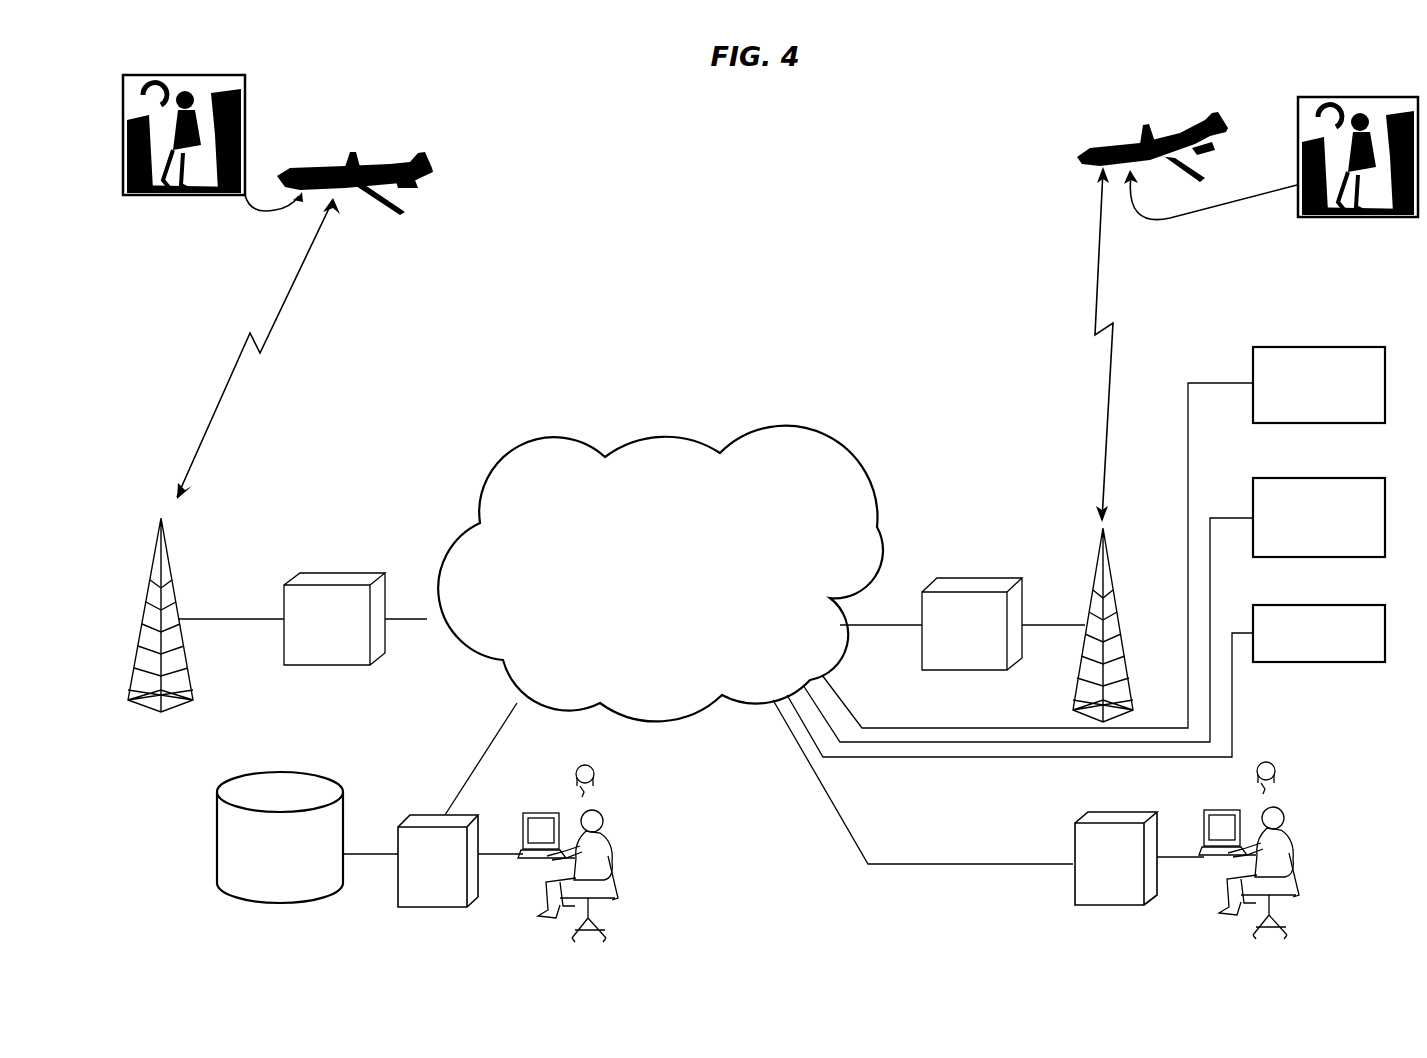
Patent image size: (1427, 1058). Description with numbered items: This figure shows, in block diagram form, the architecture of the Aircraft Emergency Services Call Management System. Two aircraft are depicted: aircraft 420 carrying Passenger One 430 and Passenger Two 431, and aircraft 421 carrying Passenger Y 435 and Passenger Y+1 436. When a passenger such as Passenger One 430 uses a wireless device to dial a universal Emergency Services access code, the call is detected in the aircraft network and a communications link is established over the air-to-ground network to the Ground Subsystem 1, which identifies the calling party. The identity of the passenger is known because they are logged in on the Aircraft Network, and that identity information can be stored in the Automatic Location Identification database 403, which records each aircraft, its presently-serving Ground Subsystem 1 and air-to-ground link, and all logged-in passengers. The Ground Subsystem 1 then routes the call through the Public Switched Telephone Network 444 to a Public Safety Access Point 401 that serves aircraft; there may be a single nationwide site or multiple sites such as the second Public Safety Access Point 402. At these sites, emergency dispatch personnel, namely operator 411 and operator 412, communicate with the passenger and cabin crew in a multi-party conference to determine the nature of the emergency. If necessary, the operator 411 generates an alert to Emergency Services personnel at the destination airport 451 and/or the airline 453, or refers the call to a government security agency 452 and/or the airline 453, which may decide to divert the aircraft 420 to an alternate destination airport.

The Ground Subsystem 1 is at (352, 580).
The Public Safety Access Point (PSAP) 401 is at (424, 815).
The Public Safety Access Point (PSAP) 402 is at (1117, 812).
The Automatic Location Identification (ALI) database 403 is at (300, 771).
The operator 411 is at (612, 843).
The emergency dispatch personnel 412 is at (1297, 838).
The aircraft 420 is at (404, 176).
The aircraft 421 is at (1110, 138).
The Passenger One 430 is at (247, 161).
The Passenger Two 431 is at (245, 80).
The Passenger Y 435 is at (1300, 184).
The Passenger Y+1 436 is at (1297, 213).
The Public Switched Telephone Network 444 is at (668, 435).
The destination airport 451 is at (1284, 346).
The government security agency 452 is at (1293, 478).
The airline 453 is at (1325, 663).